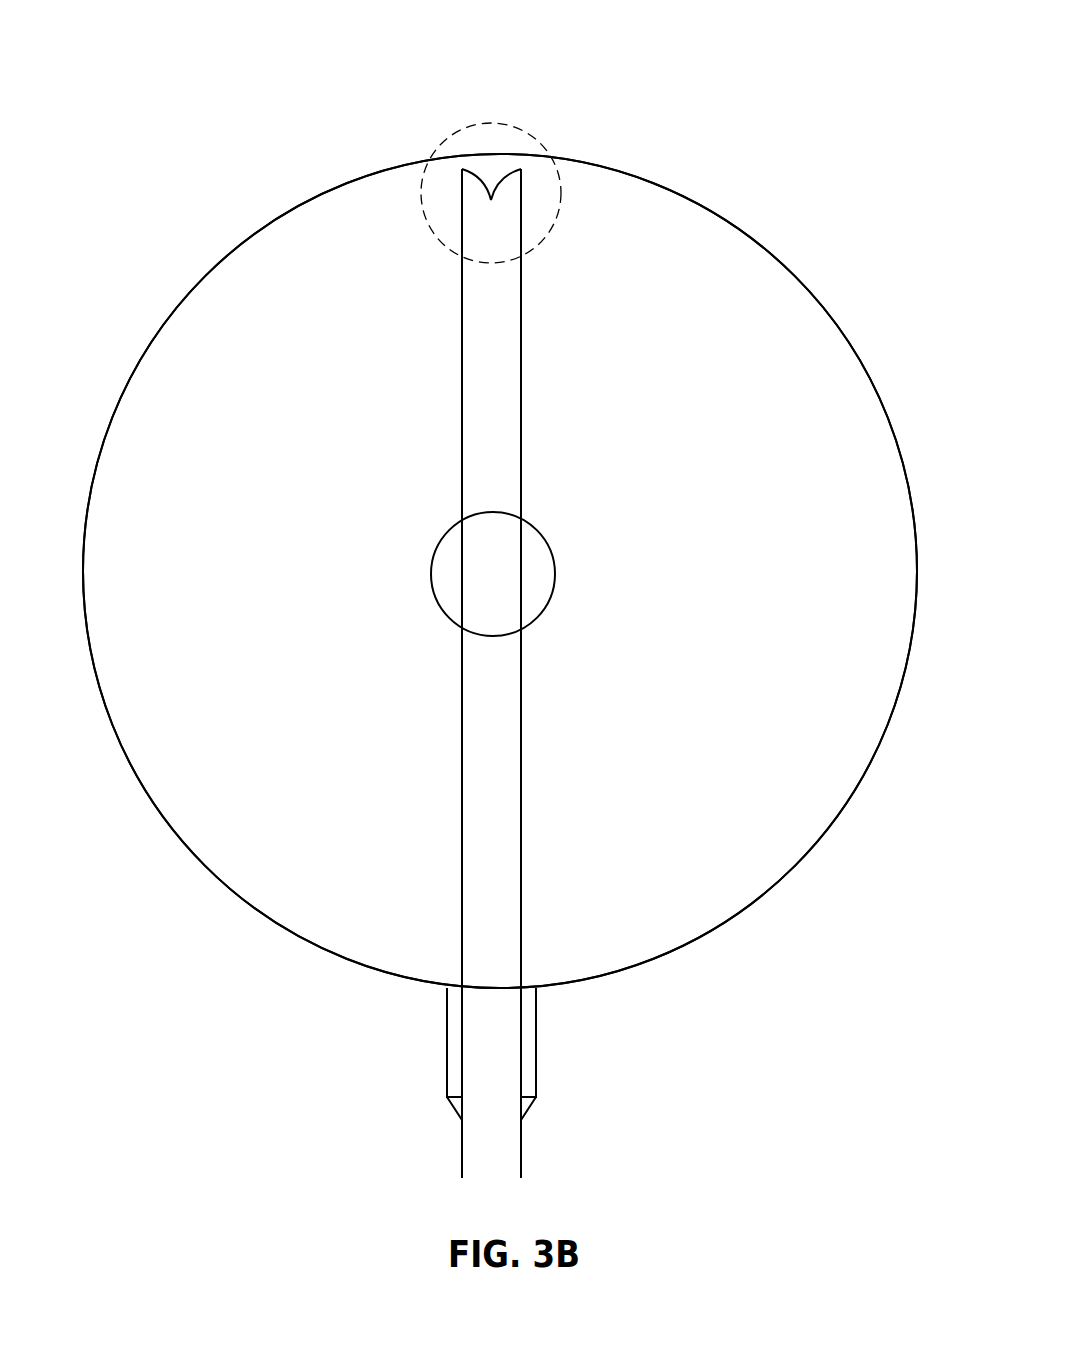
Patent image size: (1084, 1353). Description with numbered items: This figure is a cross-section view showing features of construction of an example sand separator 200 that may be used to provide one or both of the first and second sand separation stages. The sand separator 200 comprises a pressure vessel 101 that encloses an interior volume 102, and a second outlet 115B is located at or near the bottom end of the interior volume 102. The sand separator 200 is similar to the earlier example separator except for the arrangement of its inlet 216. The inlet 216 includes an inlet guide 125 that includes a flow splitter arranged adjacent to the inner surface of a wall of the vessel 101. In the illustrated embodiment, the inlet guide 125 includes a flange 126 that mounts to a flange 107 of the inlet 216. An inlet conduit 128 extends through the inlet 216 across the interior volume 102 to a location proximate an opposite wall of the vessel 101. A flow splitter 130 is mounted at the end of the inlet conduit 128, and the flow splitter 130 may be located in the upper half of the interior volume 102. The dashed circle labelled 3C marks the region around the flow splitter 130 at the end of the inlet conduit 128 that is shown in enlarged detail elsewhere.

The sand separator 200 is at (206, 66).
The pressure vessel 101 is at (632, 173).
The interior volume 102 is at (385, 247).
The flow splitter 130 is at (497, 178).
The detail view region 3C is at (558, 217).
The second outlet 115B is at (536, 590).
The inlet conduit 128 is at (478, 919).
The inlet 216 is at (537, 1025).
The flange 107 is at (447, 1080).
The flange 126 is at (453, 1108).
The inlet guide 125 is at (503, 1151).